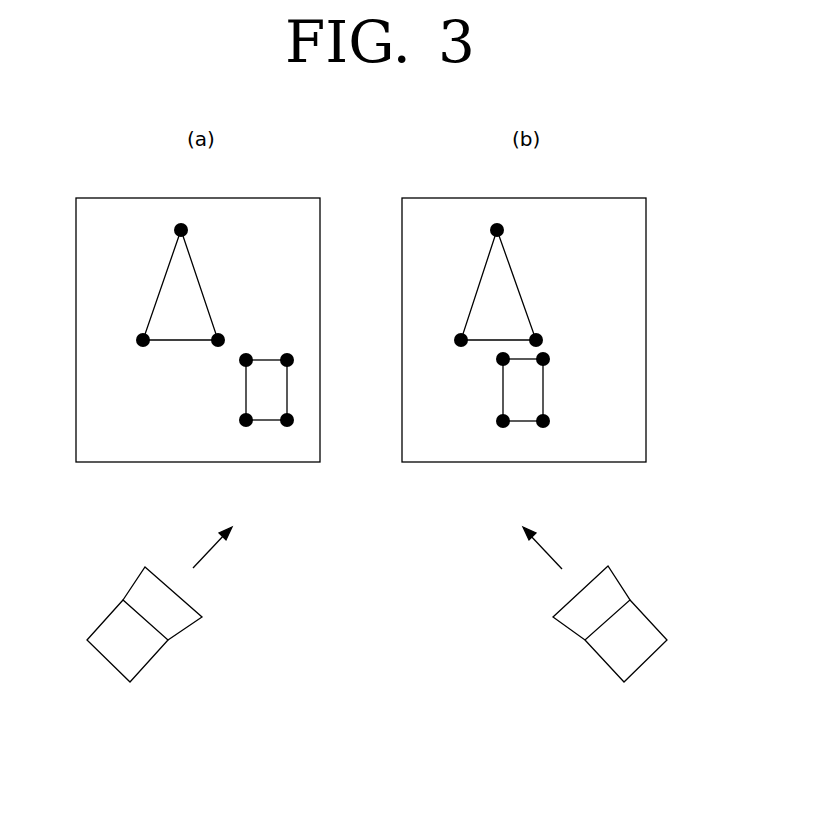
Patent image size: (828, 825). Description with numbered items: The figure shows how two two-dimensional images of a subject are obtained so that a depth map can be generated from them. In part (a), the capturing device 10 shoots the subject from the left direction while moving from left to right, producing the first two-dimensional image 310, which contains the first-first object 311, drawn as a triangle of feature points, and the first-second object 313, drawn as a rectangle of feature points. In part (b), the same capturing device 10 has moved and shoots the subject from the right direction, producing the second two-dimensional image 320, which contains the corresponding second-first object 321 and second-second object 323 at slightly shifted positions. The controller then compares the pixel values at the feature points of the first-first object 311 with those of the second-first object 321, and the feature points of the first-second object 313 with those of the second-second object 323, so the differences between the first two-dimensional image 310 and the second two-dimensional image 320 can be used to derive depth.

The capturing device 10 is at (150, 662).
The first 2D image 310 is at (288, 198).
The 1-1 object 311 is at (200, 281).
The 1-2 object 313 is at (246, 388).
The second 2D image 320 is at (613, 198).
The 2-1 object 321 is at (517, 282).
The 2-2 object 323 is at (503, 388).